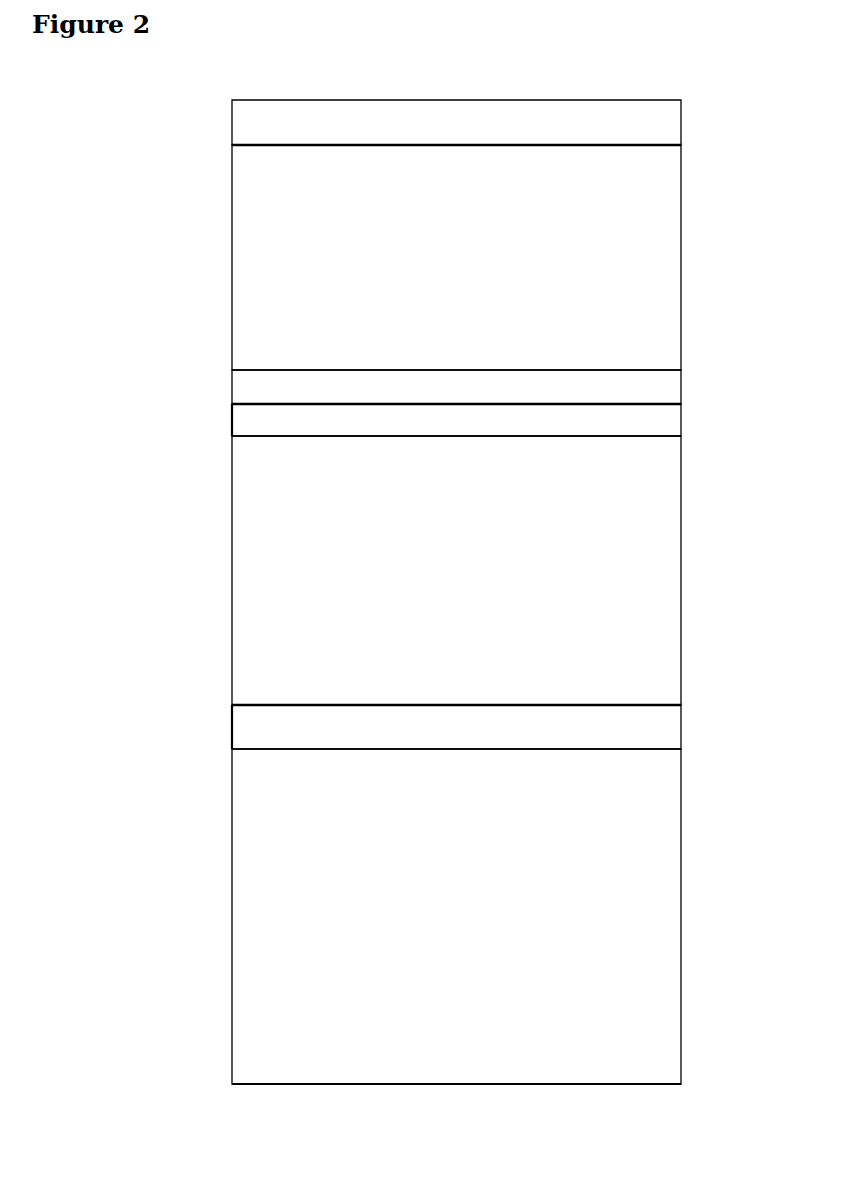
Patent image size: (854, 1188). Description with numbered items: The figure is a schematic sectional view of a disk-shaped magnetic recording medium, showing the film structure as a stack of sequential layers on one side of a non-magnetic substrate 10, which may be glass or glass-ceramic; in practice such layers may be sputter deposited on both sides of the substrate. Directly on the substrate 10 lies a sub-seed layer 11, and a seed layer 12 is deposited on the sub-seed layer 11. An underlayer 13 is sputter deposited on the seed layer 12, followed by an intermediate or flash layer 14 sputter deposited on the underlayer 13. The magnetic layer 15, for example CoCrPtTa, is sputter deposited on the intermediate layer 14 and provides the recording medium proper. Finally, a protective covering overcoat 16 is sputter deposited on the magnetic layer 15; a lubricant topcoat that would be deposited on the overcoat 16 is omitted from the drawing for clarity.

The non-magnetic substrate 10 is at (700, 926).
The sub-seed layer 11 is at (700, 727).
The seed layer 12 is at (700, 582).
The underlayer 13 is at (700, 426).
The intermediate layer 14 is at (700, 392).
The magnetic layer 15 is at (700, 260).
The protective covering overcoat 16 is at (700, 122).